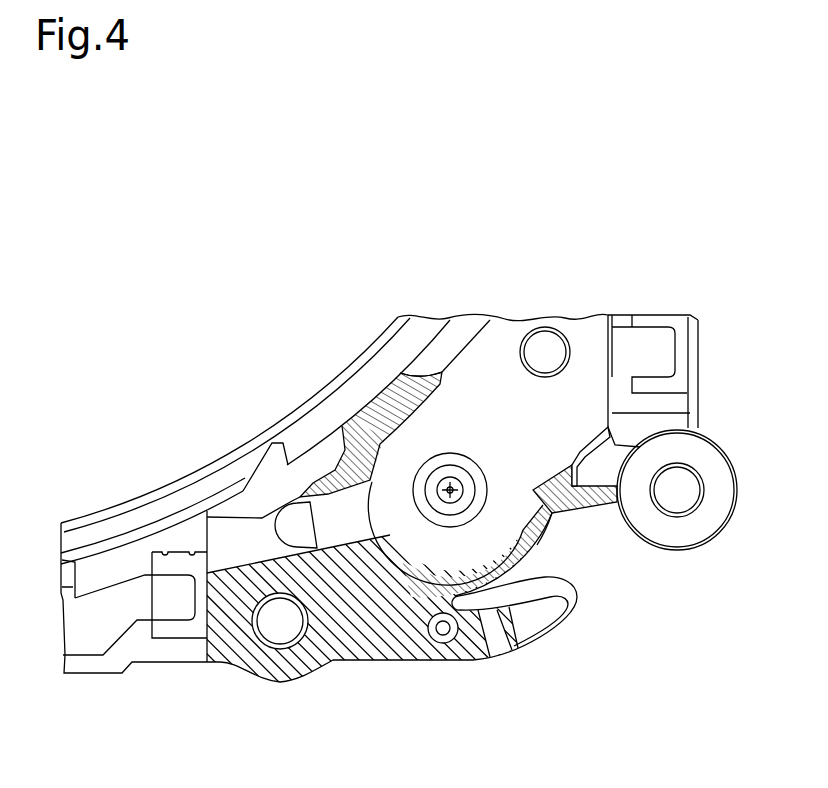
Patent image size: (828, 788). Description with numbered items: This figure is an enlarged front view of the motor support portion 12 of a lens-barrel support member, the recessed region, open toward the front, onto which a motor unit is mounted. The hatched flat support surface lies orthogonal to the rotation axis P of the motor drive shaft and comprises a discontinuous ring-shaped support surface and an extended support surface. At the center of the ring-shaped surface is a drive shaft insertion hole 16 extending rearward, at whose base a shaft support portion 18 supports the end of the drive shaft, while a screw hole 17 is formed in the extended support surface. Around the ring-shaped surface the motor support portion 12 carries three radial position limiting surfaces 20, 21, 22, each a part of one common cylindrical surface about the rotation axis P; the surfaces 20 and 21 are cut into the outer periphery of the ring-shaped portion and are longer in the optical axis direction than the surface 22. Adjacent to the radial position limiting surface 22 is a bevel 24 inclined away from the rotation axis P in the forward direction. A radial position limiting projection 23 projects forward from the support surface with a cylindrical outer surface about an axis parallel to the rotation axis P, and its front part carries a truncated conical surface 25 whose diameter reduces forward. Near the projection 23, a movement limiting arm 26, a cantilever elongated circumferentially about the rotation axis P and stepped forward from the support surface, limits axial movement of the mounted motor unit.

The motor support portion 12 is at (631, 650).
The drive shaft insertion hole 16 is at (553, 514).
The screw hole 17 is at (275, 636).
The shaft support portion 18 is at (452, 486).
The radial position limiting surface 20 is at (348, 432).
The radial position limiting surface 21 is at (443, 376).
The radial position limiting surface 22 is at (556, 493).
The radial position limiting projection 23 is at (495, 635).
The bevel 24 is at (576, 462).
The truncated conical surface 25 is at (444, 643).
The movement limiting arm 26 is at (540, 617).
The rotation axis P is at (452, 492).